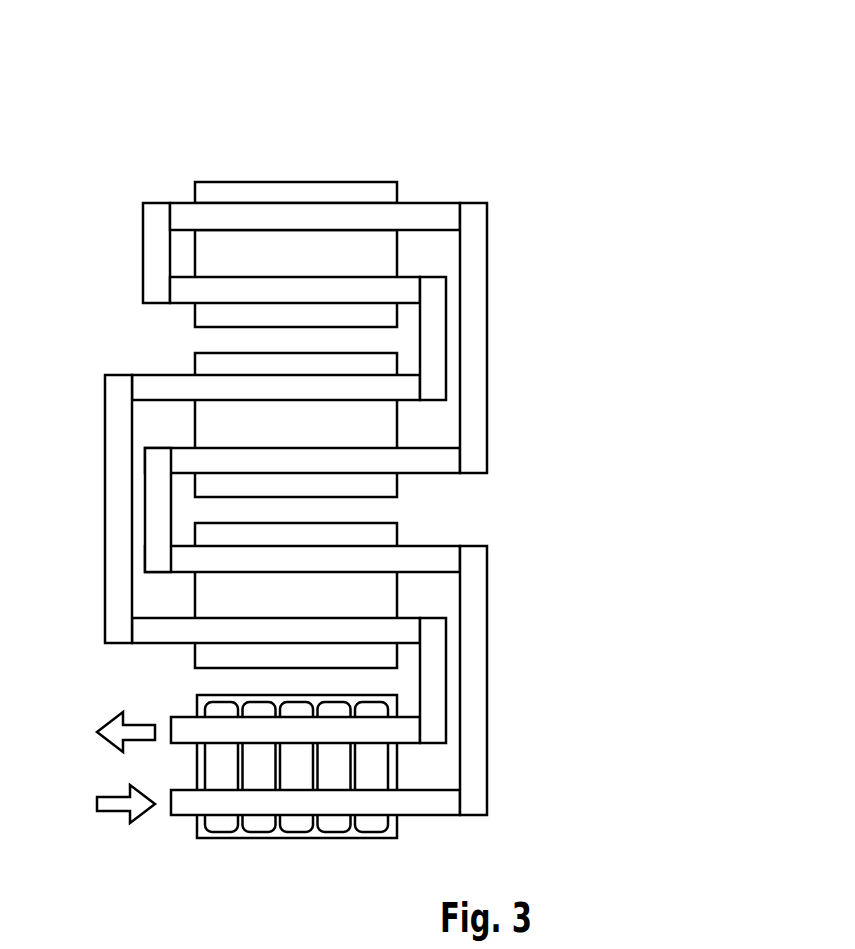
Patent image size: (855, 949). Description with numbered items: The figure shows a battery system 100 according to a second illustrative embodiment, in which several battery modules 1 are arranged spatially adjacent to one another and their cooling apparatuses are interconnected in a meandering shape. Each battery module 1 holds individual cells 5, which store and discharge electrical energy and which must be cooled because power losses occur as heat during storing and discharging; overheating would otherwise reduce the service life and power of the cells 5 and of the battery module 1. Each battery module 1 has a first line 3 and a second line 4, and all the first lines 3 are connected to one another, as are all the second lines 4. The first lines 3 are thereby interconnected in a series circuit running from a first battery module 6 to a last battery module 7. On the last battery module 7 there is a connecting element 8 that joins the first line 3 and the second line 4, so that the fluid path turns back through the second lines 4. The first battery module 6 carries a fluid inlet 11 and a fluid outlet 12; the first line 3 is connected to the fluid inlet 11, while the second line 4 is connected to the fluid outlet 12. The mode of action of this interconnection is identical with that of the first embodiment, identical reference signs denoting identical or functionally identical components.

The battery system 100 is at (432, 77).
The last battery module 7 is at (436, 174).
The battery module 1 is at (205, 316).
The first line 3 is at (178, 218).
The second line 4 is at (178, 292).
The connecting element 8 is at (153, 250).
The individual cell 5 is at (262, 826).
The first battery module 6 is at (264, 803).
The fluid inlet 11 is at (108, 812).
The fluid outlet 12 is at (138, 716).